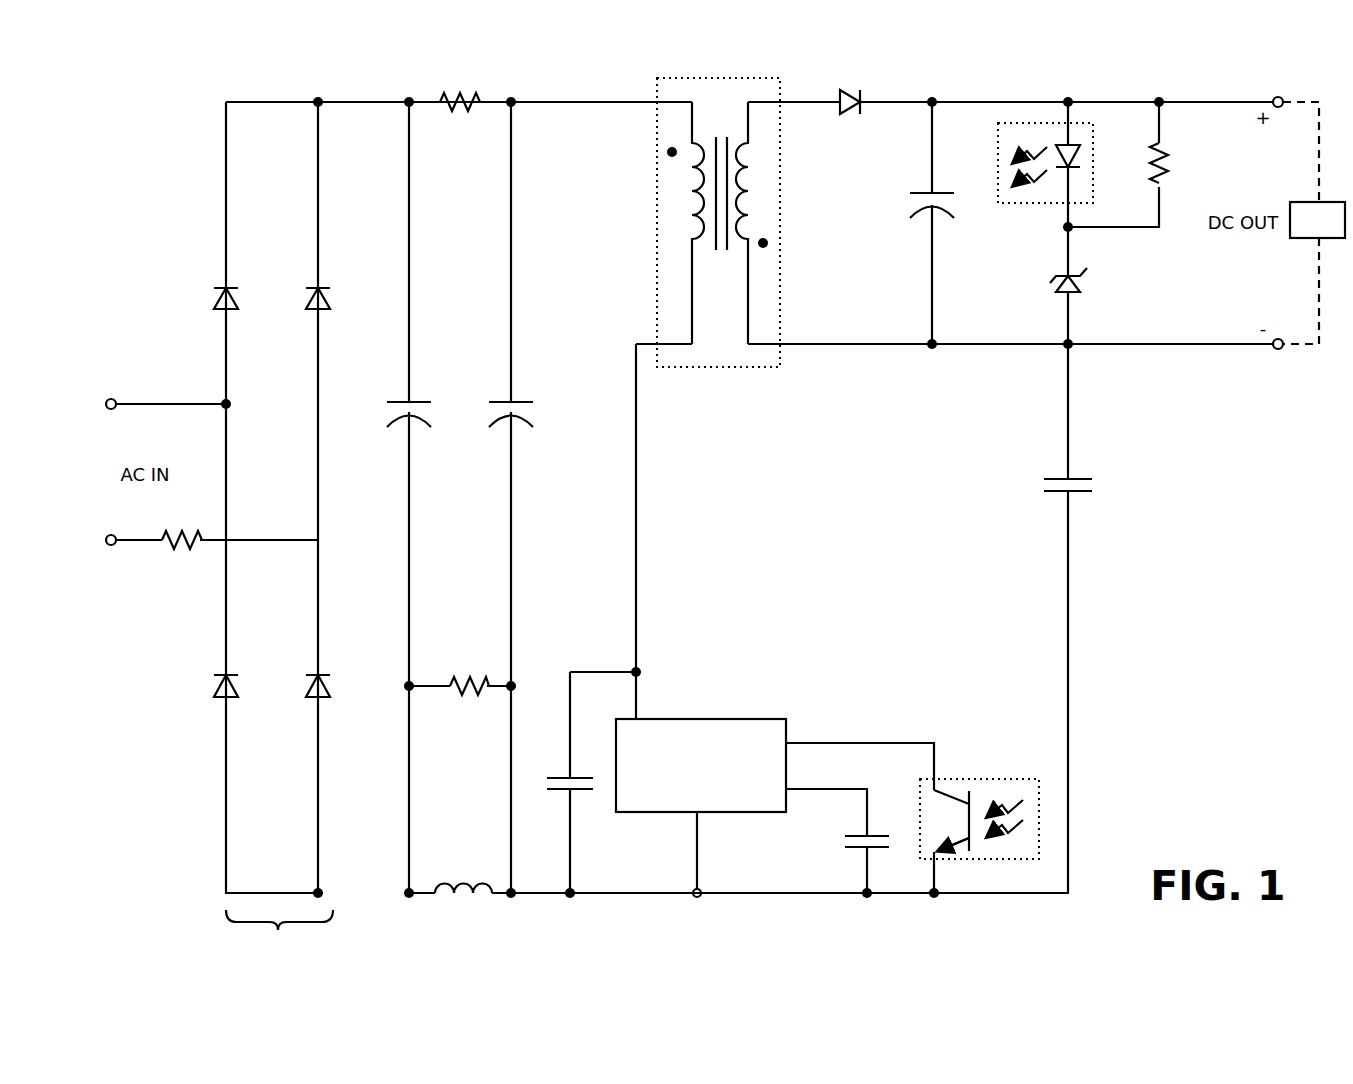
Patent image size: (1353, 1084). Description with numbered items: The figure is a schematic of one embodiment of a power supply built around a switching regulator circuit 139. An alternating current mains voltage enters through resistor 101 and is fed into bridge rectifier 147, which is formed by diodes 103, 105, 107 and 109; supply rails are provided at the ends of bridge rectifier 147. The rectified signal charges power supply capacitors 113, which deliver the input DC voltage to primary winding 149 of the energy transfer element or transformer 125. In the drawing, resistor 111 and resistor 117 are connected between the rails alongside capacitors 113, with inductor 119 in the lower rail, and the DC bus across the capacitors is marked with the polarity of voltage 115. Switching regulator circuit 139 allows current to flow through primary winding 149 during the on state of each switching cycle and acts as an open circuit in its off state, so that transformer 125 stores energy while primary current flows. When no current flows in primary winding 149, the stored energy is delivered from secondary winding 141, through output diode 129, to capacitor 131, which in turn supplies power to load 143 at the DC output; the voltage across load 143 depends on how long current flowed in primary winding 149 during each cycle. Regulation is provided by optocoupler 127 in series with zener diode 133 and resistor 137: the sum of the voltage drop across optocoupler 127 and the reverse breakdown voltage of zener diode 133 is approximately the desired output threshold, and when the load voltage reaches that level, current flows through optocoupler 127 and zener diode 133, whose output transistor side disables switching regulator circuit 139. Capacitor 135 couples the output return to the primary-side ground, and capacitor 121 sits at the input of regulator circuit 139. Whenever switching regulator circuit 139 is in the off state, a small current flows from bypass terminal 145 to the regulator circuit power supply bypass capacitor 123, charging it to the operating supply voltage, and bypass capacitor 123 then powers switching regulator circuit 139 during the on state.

The resistor 101 is at (170, 554).
The diode 103 is at (238, 297).
The diode 105 is at (238, 684).
The diode 107 is at (330, 297).
The diode 109 is at (330, 684).
The resistor 111 is at (460, 119).
The power supply capacitors 113 is at (415, 425).
The DC bus voltage 115 is at (587, 414).
The resistor 117 is at (469, 704).
The inductor 119 is at (463, 873).
The capacitor 121 is at (562, 774).
The regulator circuit power supply bypass capacitor 123 is at (841, 843).
The transformer 125 is at (714, 243).
The optocoupler 127 is at (1036, 203).
The output diode 129 is at (850, 120).
The capacitor 131 is at (923, 215).
The zener diode 133 is at (1086, 280).
The capacitor 135 is at (1080, 493).
The resistor 137 is at (1172, 165).
The switching regulator circuit 139 is at (683, 776).
The secondary winding 141 is at (758, 198).
The load 143 is at (1300, 202).
The bypass terminal 145 is at (814, 786).
The bridge rectifier 147 is at (295, 616).
The primary winding 149 is at (683, 206).